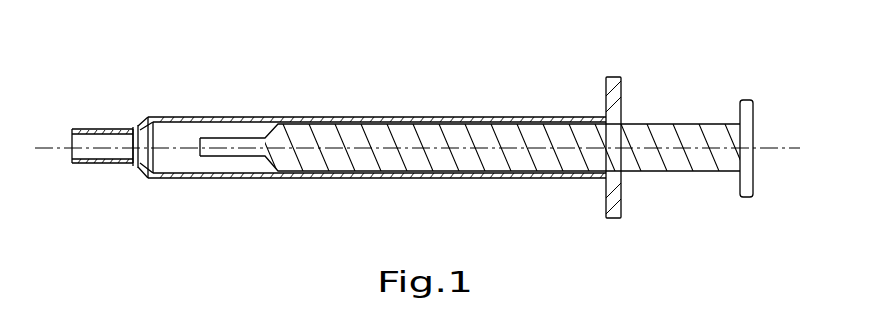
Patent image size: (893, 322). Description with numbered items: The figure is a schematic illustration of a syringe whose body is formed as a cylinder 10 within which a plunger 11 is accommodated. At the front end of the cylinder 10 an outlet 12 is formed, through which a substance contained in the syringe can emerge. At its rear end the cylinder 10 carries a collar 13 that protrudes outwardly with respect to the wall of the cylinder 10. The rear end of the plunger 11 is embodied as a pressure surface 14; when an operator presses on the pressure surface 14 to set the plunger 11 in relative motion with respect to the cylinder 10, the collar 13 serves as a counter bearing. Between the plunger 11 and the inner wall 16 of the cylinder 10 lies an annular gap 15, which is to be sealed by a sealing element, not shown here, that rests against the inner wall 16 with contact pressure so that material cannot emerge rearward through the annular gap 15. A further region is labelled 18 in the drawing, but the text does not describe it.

The cylinder 10 is at (242, 114).
The plunger 11 is at (670, 120).
The outlet 12 is at (108, 147).
The collar 13 is at (607, 88).
The pressure surface 14 is at (755, 148).
The annular gap 15 is at (272, 178).
The inner wall 16 is at (183, 165).
The chamber 18 is at (175, 138).